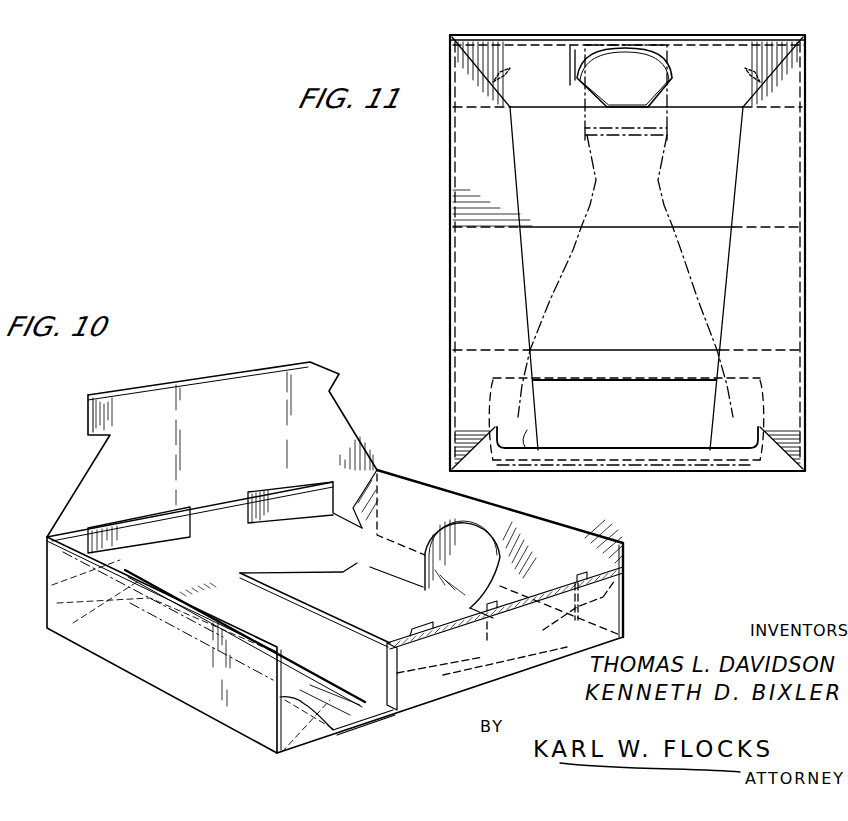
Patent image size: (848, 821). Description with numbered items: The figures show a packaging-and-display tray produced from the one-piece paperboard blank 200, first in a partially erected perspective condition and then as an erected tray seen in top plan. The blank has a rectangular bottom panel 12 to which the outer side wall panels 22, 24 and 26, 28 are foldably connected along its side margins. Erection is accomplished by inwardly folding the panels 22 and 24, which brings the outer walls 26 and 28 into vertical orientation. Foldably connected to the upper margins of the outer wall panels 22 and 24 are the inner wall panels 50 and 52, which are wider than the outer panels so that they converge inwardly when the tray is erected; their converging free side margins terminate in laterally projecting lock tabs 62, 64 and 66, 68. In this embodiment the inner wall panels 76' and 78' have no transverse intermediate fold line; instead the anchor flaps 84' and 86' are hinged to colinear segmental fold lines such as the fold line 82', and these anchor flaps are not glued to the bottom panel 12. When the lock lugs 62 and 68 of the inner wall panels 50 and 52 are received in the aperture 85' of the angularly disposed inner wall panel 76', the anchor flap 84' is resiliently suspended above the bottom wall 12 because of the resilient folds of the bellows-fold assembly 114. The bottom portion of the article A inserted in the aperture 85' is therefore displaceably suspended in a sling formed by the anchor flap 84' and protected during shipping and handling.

In FIG. 11, the blank 200 is at (743, 30).
In FIG. 11, the lock tab 64 is at (503, 76).
In FIG. 10, the lock tab 64 is at (326, 381).
In FIG. 11, the locking tab 66 is at (750, 78).
In FIG. 11, the anchor flap 86' is at (645, 100).
In FIG. 10, the anchor flap 86' is at (495, 638).
In FIG. 11, the article A is at (668, 208).
In FIG. 11, the bottom panel 12 is at (709, 271).
In FIG. 10, the bottom panel 12 is at (279, 623).
In FIG. 11, the inner wall panel 50 is at (491, 289).
In FIG. 10, the inner wall panel 50 is at (231, 451).
In FIG. 11, the inner wall panel 52 is at (776, 285).
In FIG. 11, the anchor flap 84' is at (617, 337).
In FIG. 10, the anchor flap 84' is at (350, 730).
In FIG. 11, the aperture 85' is at (637, 371).
In FIG. 11, the lock tab 62 is at (537, 436).
In FIG. 10, the lock tab 62 is at (87, 421).
In FIG. 11, the lock tab 68 is at (712, 436).
In FIG. 11, the inner wall panel 76' is at (626, 442).
In FIG. 10, the bellows-fold assembly 114 is at (92, 526).
In FIG. 10, the outer side wall panel 22 is at (239, 548).
In FIG. 10, the outer side wall panel 26 is at (182, 678).
In FIG. 10, the inner wall panel 78' is at (488, 553).
In FIG. 10, the outer side wall panel 28 is at (479, 556).
In FIG. 10, the fold line 82' is at (344, 579).
In FIG. 10, the outer side wall panel 24 is at (479, 666).